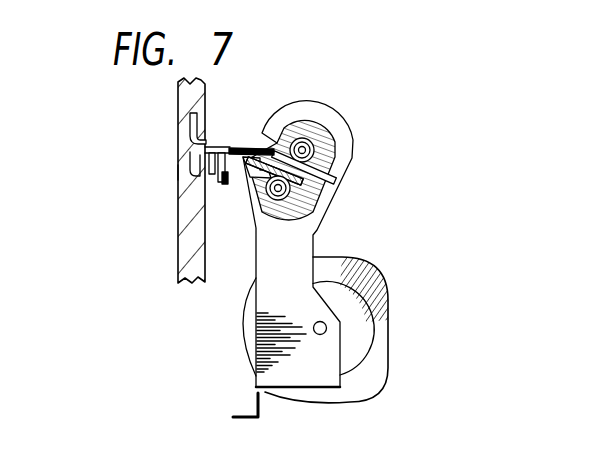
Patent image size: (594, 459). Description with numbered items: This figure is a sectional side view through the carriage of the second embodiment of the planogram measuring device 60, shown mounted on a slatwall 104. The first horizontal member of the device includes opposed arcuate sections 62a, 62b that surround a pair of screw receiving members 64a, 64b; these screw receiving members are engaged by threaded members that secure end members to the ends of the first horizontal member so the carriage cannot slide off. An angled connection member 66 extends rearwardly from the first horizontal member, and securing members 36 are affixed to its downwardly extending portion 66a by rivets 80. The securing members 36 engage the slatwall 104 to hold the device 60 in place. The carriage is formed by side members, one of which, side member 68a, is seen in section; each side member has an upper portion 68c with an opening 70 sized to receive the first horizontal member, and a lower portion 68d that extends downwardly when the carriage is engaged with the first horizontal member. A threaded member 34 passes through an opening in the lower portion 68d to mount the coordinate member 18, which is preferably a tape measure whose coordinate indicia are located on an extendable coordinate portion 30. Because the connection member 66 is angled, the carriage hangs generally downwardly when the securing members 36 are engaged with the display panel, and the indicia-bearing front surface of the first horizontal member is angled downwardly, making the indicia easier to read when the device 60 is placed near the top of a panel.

The coordinate member 18 is at (380, 333).
The extendable coordinate portion 30 is at (256, 392).
The threaded member 34 is at (326, 327).
The securing member 36 is at (176, 173).
The planogram measuring device 60 is at (316, 67).
The arcuate section 62a is at (305, 137).
The arcuate section 62b is at (283, 205).
The screw receiving member 64a is at (330, 143).
The screw receiving member 64b is at (281, 197).
The angled connection member 66 is at (248, 147).
The downwardly extending portion 66a is at (216, 176).
The side member 68a is at (300, 247).
The upper portion 68c is at (333, 124).
The lower portion 68d is at (317, 373).
The opening 70 is at (264, 150).
The rivet 80 is at (186, 197).
The slatwall 104 is at (190, 248).